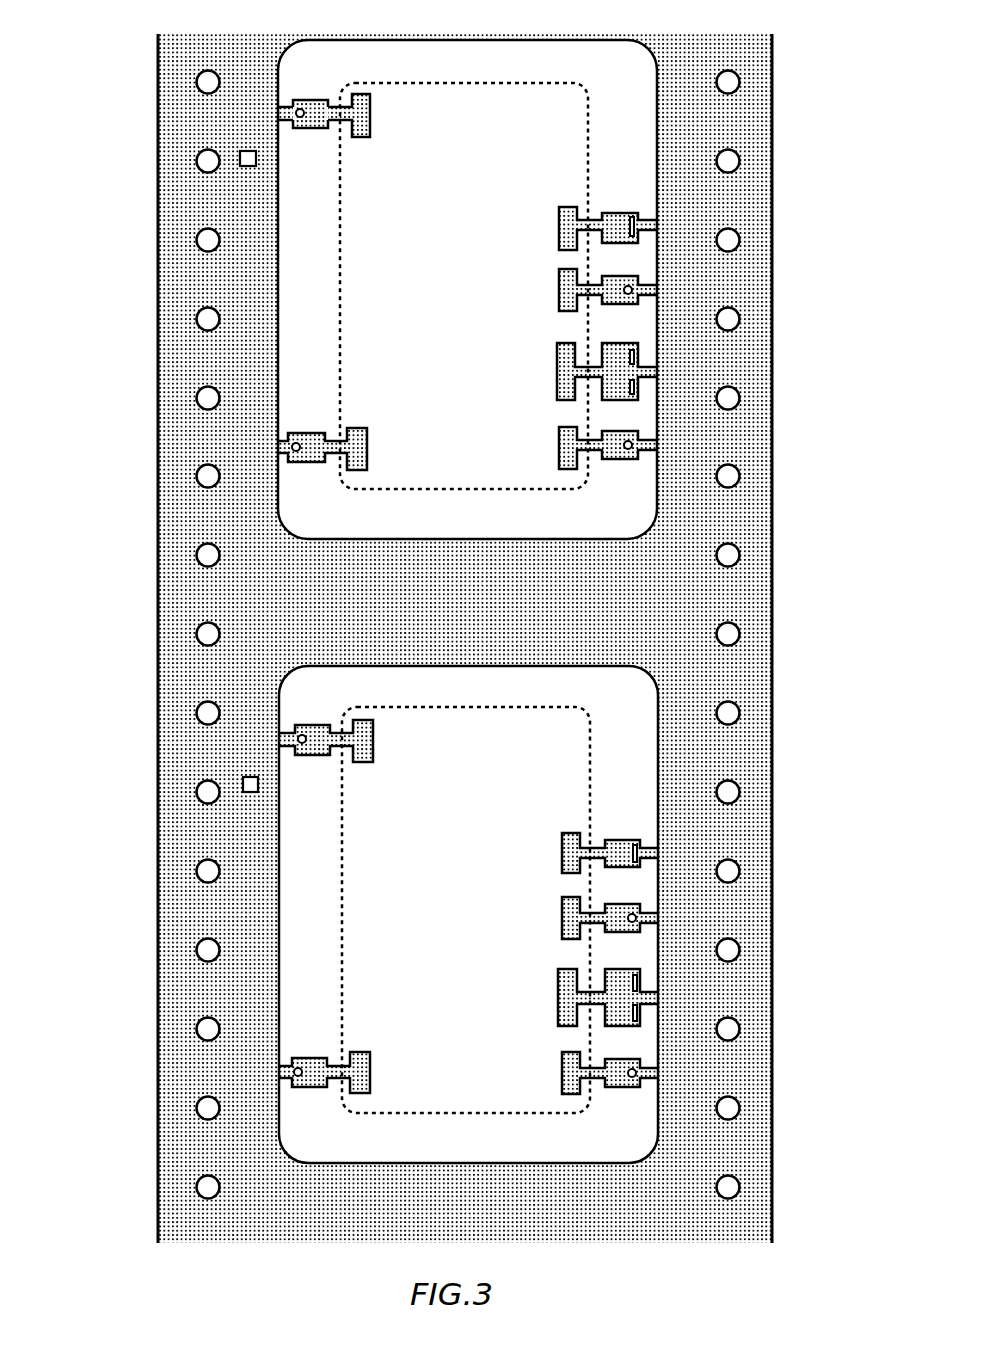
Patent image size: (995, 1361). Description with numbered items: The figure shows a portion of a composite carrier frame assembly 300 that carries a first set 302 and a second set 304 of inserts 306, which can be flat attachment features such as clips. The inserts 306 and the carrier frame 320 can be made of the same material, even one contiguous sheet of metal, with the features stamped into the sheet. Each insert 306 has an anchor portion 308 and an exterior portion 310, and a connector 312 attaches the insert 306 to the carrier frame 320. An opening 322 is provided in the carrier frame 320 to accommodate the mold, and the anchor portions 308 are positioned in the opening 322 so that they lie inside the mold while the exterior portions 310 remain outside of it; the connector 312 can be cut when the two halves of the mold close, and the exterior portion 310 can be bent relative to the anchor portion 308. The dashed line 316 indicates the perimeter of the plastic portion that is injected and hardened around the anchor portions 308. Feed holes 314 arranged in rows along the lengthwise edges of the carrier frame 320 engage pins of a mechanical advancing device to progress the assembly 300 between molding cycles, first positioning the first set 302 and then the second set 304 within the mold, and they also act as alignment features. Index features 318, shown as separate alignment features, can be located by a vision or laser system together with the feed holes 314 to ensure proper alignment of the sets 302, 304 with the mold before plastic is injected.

The composite carrier frame assembly 300 is at (110, 107).
The first set of inserts 302 is at (380, 332).
The second set of inserts 304 is at (230, 900).
The insert 306 is at (438, 570).
The anchor portion 308 is at (363, 118).
The exterior portion 310 is at (312, 110).
The connector 312 is at (283, 108).
The feed hole 314 is at (735, 233).
The dashed line 316 is at (487, 490).
The index feature 318 is at (238, 168).
The carrier frame 320 is at (753, 60).
The opening 322 is at (620, 541).